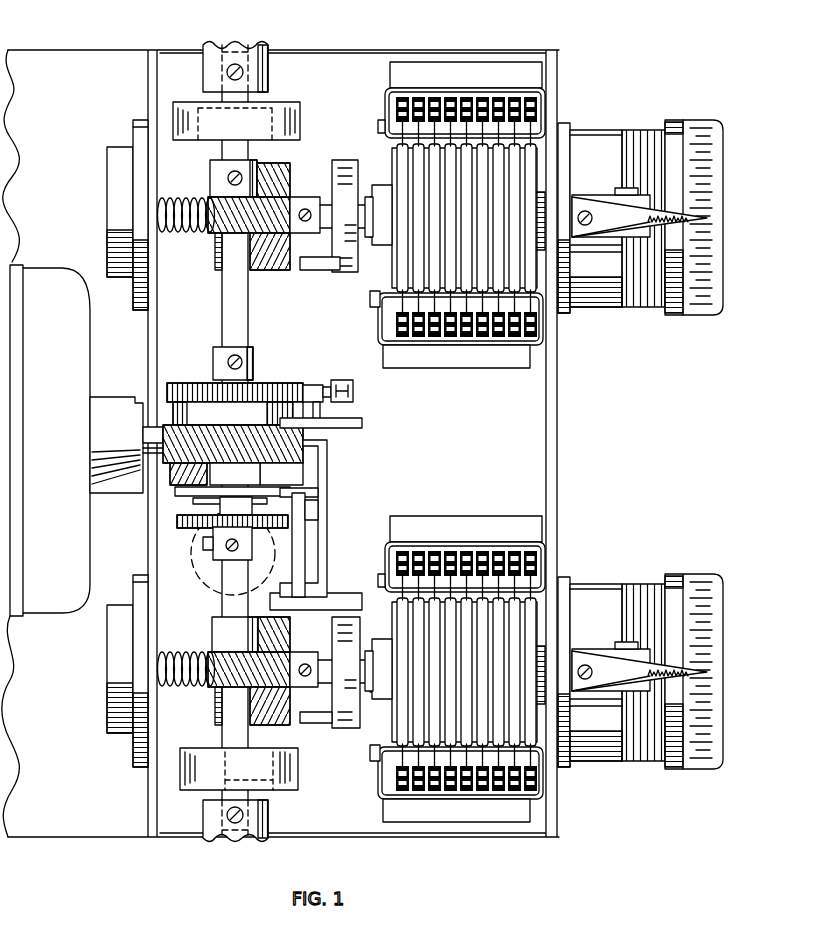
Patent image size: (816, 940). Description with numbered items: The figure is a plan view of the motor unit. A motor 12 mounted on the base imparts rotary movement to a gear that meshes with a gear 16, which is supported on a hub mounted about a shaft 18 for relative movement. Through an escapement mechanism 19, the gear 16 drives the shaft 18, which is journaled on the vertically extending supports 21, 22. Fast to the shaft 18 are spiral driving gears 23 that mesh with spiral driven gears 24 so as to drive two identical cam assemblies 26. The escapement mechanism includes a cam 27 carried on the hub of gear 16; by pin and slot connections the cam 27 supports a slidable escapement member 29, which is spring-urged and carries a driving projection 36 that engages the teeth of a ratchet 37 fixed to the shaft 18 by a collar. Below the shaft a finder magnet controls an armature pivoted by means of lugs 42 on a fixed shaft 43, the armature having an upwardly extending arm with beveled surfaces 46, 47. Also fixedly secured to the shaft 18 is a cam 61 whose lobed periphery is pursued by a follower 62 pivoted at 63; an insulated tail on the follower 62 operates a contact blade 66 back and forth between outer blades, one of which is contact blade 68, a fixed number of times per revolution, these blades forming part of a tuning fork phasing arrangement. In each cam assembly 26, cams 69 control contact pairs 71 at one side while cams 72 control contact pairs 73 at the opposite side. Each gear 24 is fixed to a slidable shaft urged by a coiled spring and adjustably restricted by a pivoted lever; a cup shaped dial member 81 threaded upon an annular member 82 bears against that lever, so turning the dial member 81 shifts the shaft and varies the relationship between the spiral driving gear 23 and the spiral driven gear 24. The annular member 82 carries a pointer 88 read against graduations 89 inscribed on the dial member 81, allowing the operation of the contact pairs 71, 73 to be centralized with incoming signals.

The motor 12 is at (50, 282).
The gear 16 is at (327, 458).
The shaft 18 is at (250, 322).
The escapement mechanism 19 is at (332, 497).
The vertically extending support 21 is at (293, 793).
The vertically extending support 22 is at (300, 118).
The spiral driving gear 23 is at (212, 195).
The spiral driven gear 24 is at (290, 183).
The cam assembly 26 is at (388, 166).
The cam 27 is at (175, 492).
The slidable escapement member 29 is at (193, 504).
The driving projection 36 is at (228, 497).
The ratchet 37 is at (190, 528).
The lug 42 is at (360, 428).
The fixed shaft 43 is at (302, 563).
The beveled surface 46 is at (314, 510).
The beveled surface 47 is at (295, 495).
The cam 61 is at (200, 383).
The follower 62 is at (309, 385).
The pivot 63 is at (322, 412).
The contact blade 66 is at (333, 387).
The contact blade 68 is at (347, 380).
The cam 69 is at (392, 612).
The contact pair 71 is at (457, 95).
The cam 72 is at (412, 728).
The contact pair 73 is at (457, 342).
The cup shaped dial member 81 is at (717, 128).
The annular member 82 is at (585, 135).
The pointer 88 is at (607, 226).
The graduations 89 is at (710, 308).